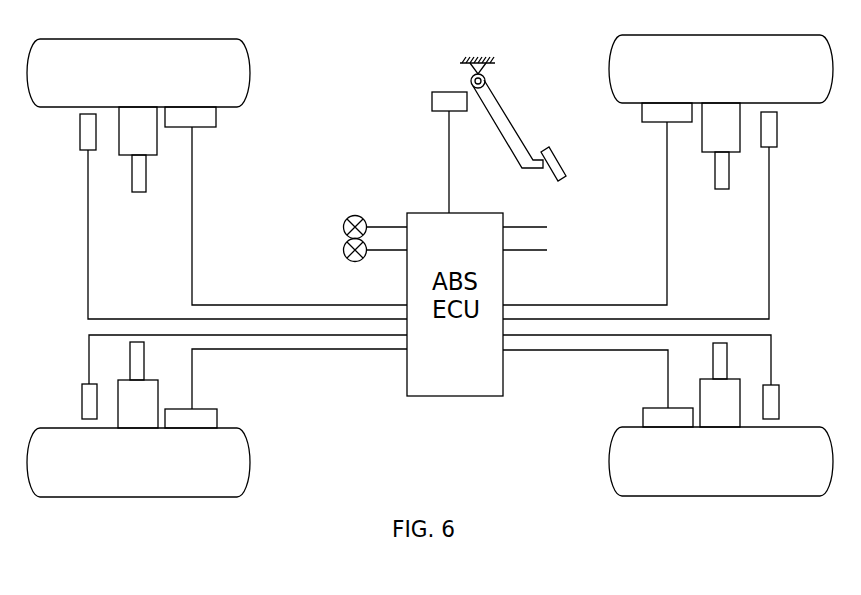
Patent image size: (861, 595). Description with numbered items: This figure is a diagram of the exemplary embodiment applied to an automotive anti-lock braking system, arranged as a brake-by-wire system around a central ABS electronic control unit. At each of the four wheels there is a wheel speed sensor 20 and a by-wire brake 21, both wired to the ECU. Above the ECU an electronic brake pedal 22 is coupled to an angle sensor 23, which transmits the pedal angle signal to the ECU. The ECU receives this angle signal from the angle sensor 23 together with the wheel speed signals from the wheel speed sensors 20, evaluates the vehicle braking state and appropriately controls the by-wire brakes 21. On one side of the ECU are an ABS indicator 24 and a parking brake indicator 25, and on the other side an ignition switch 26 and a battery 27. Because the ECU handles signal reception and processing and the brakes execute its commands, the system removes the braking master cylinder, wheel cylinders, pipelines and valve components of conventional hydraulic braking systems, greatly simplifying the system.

The wheel speed sensor 20 is at (87, 132).
The by-wire brake 21 is at (190, 116).
The electronic brake pedal 22 is at (497, 100).
The angle sensor 23 is at (448, 100).
The ABS indicator 24 is at (354, 227).
The parking brake indicator 25 is at (354, 252).
The ignition switch 26 is at (543, 227).
The battery 27 is at (543, 252).